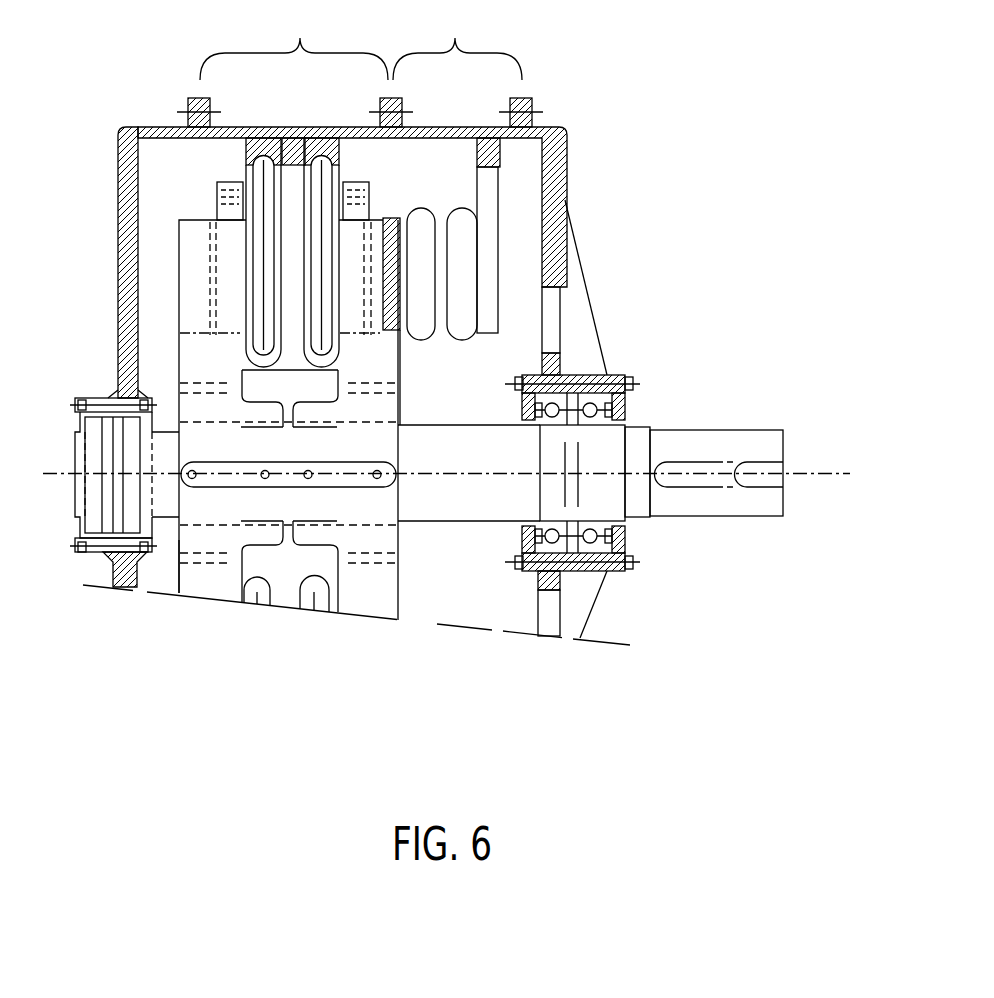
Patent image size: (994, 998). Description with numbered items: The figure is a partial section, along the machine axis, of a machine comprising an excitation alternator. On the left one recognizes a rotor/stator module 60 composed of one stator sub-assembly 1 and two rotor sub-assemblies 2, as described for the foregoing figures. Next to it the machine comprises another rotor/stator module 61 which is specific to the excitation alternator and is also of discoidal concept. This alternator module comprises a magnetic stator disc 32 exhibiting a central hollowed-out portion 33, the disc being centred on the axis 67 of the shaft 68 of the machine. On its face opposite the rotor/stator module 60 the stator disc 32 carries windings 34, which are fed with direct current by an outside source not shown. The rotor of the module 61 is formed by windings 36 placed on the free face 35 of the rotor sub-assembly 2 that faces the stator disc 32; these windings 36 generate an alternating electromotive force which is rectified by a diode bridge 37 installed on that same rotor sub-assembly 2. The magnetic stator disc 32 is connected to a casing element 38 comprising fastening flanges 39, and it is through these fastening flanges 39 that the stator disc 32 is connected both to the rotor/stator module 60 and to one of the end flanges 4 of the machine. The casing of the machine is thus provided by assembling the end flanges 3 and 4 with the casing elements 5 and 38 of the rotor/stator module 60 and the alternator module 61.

The stator sub-assembly 1 is at (271, 112).
The rotor sub-assembly 2 is at (172, 570).
The end flange 3 is at (118, 262).
The end flange 4 is at (587, 292).
The casing element 5 is at (307, 128).
The magnetic stator disc 32 is at (490, 178).
The central hollowed-out portion 33 is at (473, 590).
The windings 34 is at (463, 252).
The face of the rotor disc 35 is at (404, 352).
The windings 36 is at (420, 233).
The diode bridge 37 is at (392, 218).
The casing element 38 is at (457, 127).
The fastening flanges 39 is at (403, 101).
The rotor/stator module 60 is at (294, 41).
The rotor/stator module 61 is at (457, 41).
The axis 67 is at (826, 460).
The shaft 68 is at (712, 446).